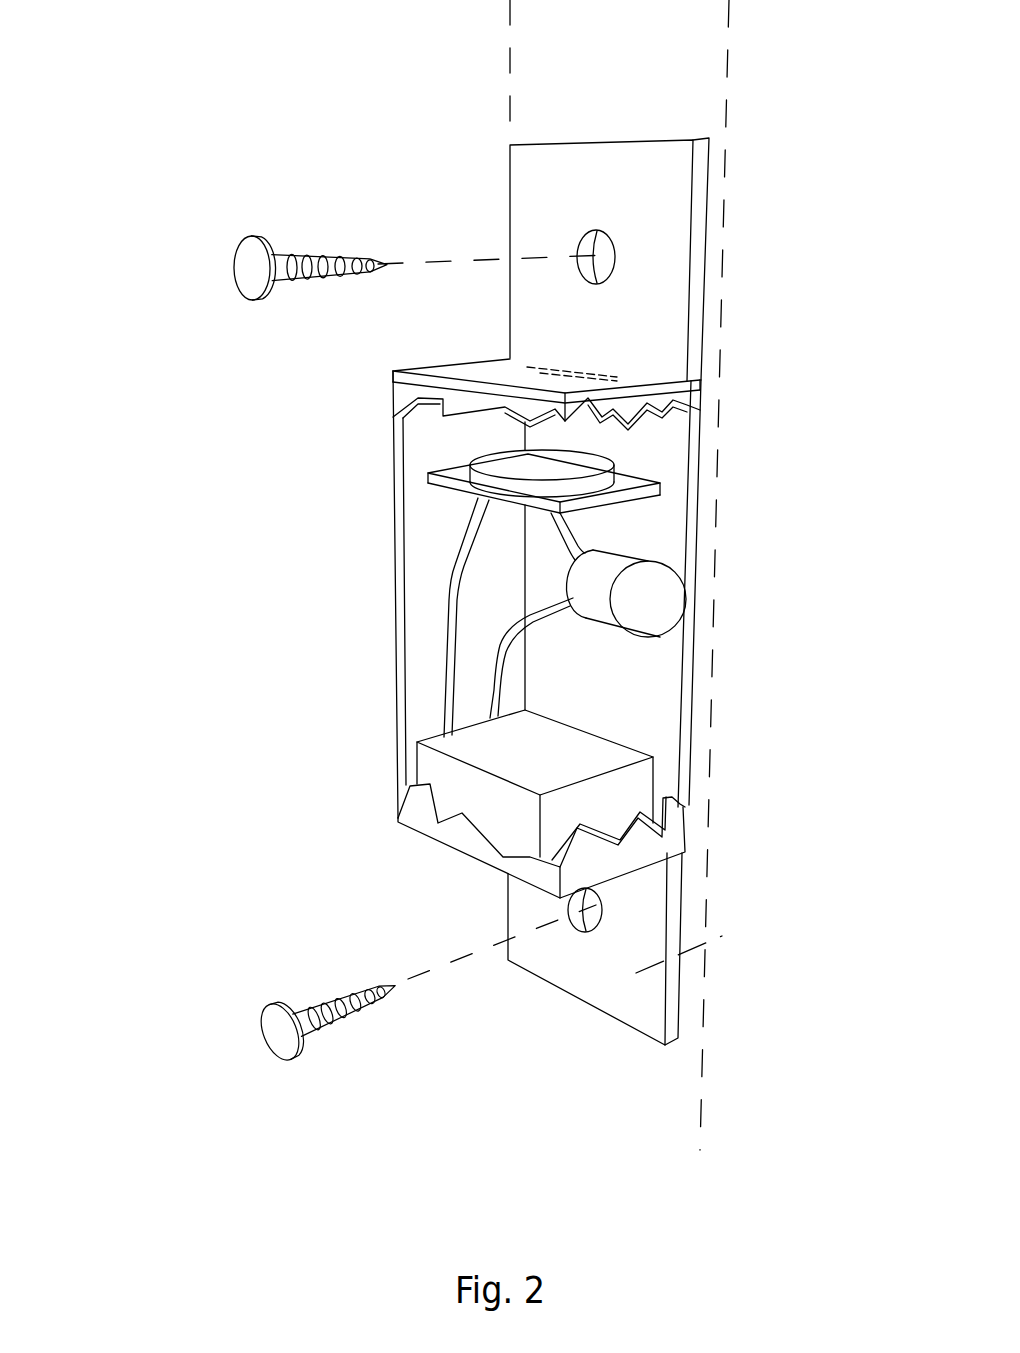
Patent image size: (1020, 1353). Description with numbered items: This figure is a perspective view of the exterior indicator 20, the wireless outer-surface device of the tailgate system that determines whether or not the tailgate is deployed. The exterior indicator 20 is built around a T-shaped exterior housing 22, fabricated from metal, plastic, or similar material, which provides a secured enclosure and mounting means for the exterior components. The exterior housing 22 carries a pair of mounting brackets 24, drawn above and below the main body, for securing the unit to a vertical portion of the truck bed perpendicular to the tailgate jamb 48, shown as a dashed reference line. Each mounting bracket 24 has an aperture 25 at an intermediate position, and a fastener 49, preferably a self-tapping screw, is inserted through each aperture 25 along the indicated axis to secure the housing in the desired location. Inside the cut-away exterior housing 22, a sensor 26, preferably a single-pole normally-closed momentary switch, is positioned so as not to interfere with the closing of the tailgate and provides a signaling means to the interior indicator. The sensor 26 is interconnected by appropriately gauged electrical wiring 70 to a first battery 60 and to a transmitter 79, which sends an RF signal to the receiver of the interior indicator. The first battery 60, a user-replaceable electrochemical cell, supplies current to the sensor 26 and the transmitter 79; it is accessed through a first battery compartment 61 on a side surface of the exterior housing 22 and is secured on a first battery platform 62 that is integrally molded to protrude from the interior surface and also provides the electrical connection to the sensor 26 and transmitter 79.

The exterior indicator 20 is at (116, 104).
The exterior housing 22 is at (394, 548).
The mounting bracket 24 is at (548, 165).
The aperture 25 is at (598, 237).
The sensor 26 is at (653, 599).
The tailgate jamb 48 is at (723, 253).
The fastener 49 is at (255, 268).
The first battery 60 is at (507, 463).
The first battery compartment 61 is at (530, 377).
The first battery platform 62 is at (460, 475).
The electrical wiring 70 is at (565, 538).
The transmitter 79 is at (445, 782).